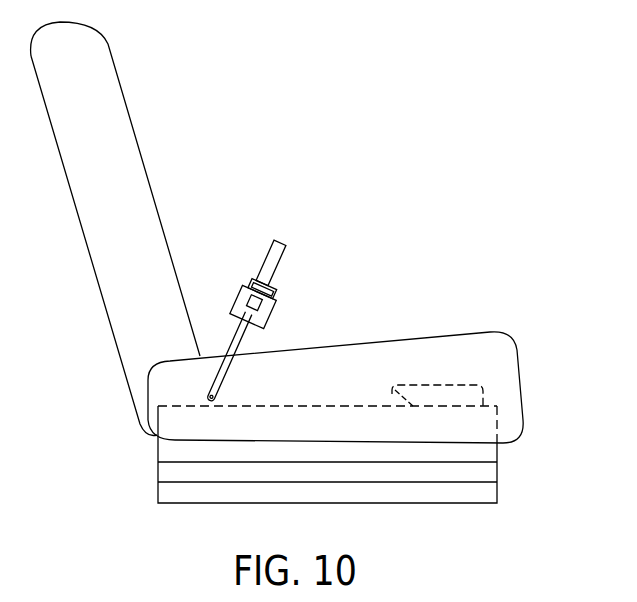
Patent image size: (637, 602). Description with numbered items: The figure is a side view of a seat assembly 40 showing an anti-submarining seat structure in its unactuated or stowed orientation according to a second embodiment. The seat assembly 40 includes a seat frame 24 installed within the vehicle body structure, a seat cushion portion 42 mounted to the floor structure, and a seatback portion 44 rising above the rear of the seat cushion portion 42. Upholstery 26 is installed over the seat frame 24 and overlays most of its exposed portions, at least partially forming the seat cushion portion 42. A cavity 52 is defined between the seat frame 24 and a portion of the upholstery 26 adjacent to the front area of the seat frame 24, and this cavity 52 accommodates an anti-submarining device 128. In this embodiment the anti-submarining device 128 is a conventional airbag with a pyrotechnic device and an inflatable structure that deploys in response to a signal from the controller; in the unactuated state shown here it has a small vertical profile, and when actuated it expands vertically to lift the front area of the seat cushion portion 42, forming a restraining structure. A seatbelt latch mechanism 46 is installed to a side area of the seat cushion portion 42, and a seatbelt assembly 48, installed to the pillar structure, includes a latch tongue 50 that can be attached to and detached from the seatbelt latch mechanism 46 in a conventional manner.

The seat assembly 40 is at (417, 155).
The seatback portion 44 is at (100, 162).
The seat cushion portion 42 is at (353, 380).
The upholstery 26 is at (417, 335).
The seat frame 24 is at (281, 420).
The anti-submarining device 128 is at (462, 378).
The cavity 52 is at (410, 406).
The seatbelt latch mechanism 46 is at (240, 311).
The seatbelt assembly 48 is at (279, 258).
The latch tongue 50 is at (270, 297).